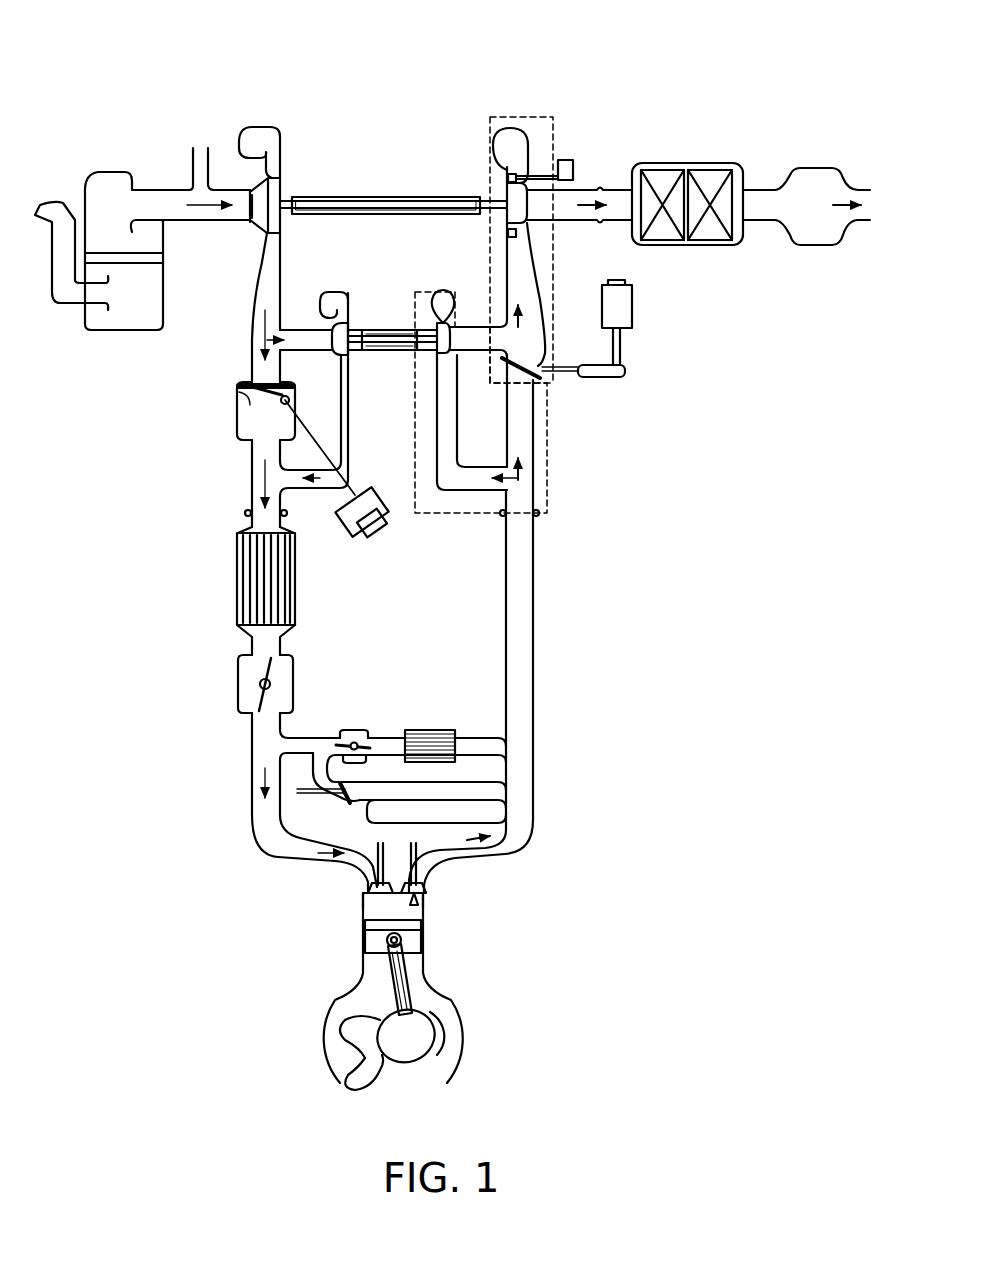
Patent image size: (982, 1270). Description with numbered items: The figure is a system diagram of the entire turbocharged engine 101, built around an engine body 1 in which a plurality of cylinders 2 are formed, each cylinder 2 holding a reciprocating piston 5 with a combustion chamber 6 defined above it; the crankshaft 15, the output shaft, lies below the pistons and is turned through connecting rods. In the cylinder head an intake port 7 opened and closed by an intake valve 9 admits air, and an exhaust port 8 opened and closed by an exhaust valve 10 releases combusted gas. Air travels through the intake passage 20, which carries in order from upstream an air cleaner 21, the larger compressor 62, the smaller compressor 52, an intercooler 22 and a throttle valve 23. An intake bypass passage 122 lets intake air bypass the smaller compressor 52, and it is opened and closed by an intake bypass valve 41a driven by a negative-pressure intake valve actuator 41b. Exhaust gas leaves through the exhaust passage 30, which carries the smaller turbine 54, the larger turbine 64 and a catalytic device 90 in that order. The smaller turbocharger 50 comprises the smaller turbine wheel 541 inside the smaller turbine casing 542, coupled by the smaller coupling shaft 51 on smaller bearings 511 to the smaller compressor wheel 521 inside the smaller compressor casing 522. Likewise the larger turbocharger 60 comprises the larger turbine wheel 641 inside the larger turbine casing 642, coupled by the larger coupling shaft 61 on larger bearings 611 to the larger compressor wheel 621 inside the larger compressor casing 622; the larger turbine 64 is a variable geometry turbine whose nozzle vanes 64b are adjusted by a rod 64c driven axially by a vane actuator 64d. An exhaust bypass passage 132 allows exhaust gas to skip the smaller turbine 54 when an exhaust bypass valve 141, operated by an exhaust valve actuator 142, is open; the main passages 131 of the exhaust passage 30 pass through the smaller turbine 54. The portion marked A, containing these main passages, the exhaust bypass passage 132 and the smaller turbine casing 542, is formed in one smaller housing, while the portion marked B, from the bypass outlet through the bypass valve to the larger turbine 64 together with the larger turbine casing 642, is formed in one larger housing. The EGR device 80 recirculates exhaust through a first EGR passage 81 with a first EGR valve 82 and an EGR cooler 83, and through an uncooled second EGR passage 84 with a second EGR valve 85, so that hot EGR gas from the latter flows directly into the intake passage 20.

The turbocharged engine 101 is at (735, 52).
The larger turbocharger 60 is at (423, 256).
The larger compressor 62 is at (298, 200).
The larger compressor casing 622 is at (267, 130).
The larger compressor wheel 621 is at (275, 212).
The larger coupling shaft 61 is at (385, 197).
The larger bearings 611 is at (312, 197).
The larger turbine 64 is at (513, 260).
The larger turbine casing 642 is at (505, 128).
The larger turbine wheel 641 is at (498, 214).
The nozzle vanes 64b is at (505, 172).
The rod 64c is at (542, 165).
The vane actuator 64d is at (567, 160).
The catalytic device 90 is at (688, 163).
The air cleaner 21 is at (100, 332).
The intake bypass passage 122 is at (250, 355).
The intake bypass valve 41a is at (243, 395).
The negative-pressure intake valve actuator 41b is at (380, 520).
The smaller turbocharger 50 is at (355, 350).
The smaller compressor wheel 521 is at (340, 330).
The smaller compressor 52 is at (334, 302).
The smaller compressor casing 522 is at (335, 292).
The smaller coupling shaft 51 is at (385, 352).
The smaller bearings 511 is at (360, 346).
The smaller turbine 54 is at (439, 293).
The smaller turbine casing 542 is at (423, 318).
The smaller turbine wheel 541 is at (450, 360).
The exhaust passage 30 is at (518, 599).
The main passages 131 is at (535, 550).
The exhaust bypass passage 132 is at (535, 420).
The exhaust bypass valve 141 is at (545, 378).
The exhaust valve actuator 142 is at (633, 300).
The portion inside smaller housing A is at (550, 483).
The portion inside larger housing B is at (555, 257).
The intercooler 22 is at (250, 578).
The throttle valve 23 is at (248, 697).
The intake passage 20 is at (255, 852).
The exhaust gas recirculation device 80 is at (401, 719).
The first EGR passage 81 is at (490, 738).
The first EGR valve 82 is at (350, 730).
The EGR cooler 83 is at (425, 730).
The second EGR passage 84 is at (428, 799).
The second EGR valve 85 is at (355, 802).
The engine body 1 is at (410, 966).
The cylinder 2 is at (425, 922).
The piston 5 is at (372, 938).
The combustion chamber 6 is at (394, 910).
The intake port 7 is at (363, 878).
The exhaust port 8 is at (425, 872).
The intake valve 9 is at (363, 908).
The exhaust valve 10 is at (420, 905).
The crankshaft 15 is at (437, 1005).